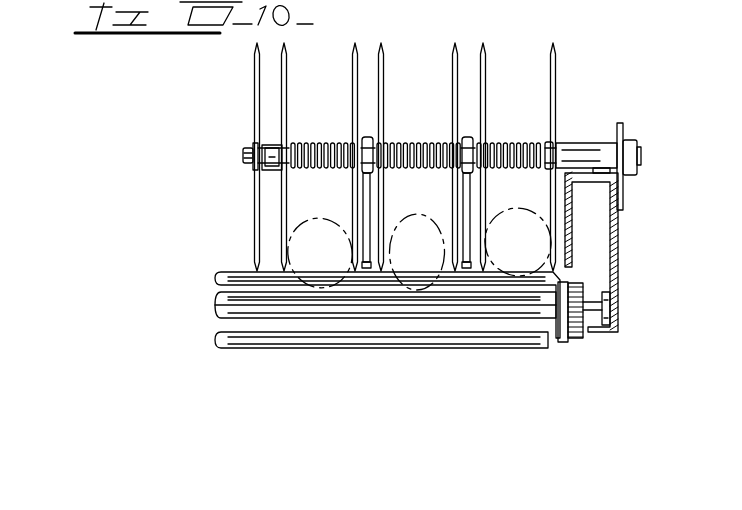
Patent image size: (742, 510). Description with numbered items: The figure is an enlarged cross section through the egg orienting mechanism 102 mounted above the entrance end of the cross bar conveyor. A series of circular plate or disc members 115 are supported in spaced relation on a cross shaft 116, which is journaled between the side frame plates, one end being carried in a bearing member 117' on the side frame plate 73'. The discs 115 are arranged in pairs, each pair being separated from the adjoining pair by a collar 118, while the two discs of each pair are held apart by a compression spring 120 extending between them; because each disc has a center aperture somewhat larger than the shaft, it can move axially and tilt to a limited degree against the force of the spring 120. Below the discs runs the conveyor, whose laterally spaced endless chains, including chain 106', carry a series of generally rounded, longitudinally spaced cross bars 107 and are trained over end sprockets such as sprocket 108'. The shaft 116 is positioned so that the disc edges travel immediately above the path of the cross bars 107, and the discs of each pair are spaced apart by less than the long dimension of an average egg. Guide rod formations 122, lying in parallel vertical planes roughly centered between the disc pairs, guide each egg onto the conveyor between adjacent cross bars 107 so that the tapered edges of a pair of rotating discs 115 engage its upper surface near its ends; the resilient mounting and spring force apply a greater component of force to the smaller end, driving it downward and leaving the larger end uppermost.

The circular plate or disc member 115 is at (384, 76).
The orienting mechanism 102 is at (560, 100).
The cross shaft 116 is at (253, 146).
The compression spring 120 is at (431, 126).
The collar 118 is at (475, 143).
The guide rod formation 122 is at (470, 192).
The bearing member 117' is at (651, 155).
The side frame plate 73' is at (615, 250).
The endless chain 106' is at (622, 290).
The end sprocket 108' is at (629, 306).
The cross bar 107 is at (222, 280).